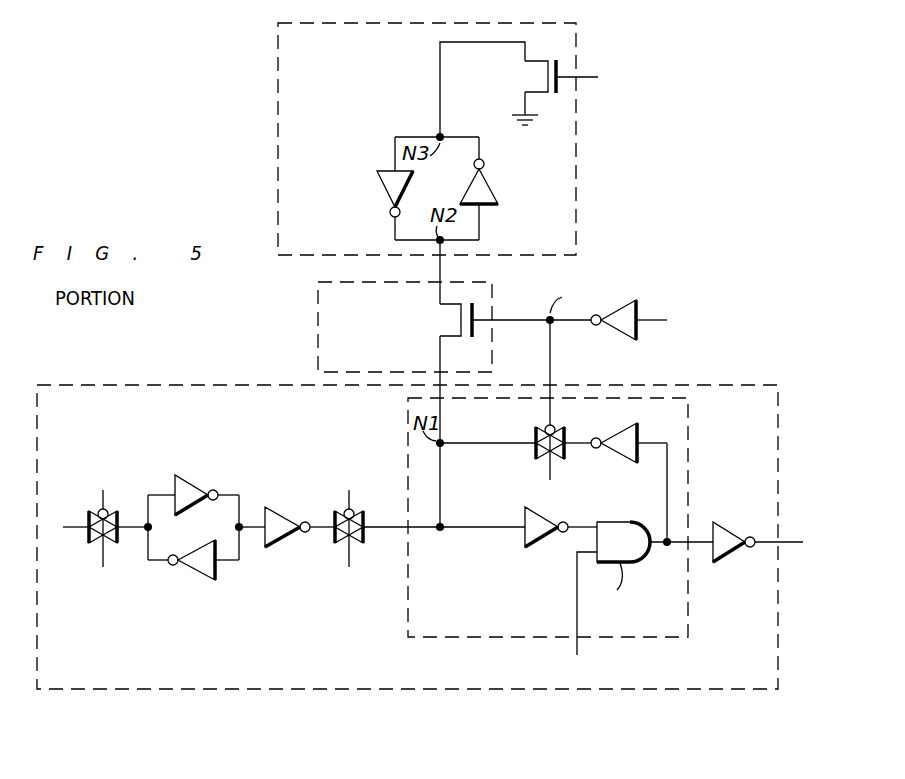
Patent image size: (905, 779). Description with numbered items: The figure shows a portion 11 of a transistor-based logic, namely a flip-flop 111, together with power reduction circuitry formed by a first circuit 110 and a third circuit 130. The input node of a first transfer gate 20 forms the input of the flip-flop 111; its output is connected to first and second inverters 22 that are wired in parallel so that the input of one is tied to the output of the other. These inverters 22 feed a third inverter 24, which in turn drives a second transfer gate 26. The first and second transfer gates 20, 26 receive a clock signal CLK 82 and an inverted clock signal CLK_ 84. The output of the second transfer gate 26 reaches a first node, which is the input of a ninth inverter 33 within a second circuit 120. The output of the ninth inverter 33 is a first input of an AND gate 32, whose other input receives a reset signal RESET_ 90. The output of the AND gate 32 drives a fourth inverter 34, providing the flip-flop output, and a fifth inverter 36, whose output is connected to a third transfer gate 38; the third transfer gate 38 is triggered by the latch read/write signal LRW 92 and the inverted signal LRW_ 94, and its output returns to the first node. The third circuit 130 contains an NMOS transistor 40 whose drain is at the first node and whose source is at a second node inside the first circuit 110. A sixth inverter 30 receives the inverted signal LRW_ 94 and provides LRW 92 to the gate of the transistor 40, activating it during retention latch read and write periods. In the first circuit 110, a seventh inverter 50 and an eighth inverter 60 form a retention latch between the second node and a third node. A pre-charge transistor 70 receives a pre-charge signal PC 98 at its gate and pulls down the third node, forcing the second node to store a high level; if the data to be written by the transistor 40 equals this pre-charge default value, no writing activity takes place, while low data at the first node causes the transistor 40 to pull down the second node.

The portion 11 is at (163, 307).
The first transfer gate 20 is at (90, 517).
The first and second inverters 22 is at (197, 487).
The third inverter 24 is at (283, 545).
The second transfer gate 26 is at (365, 518).
The sixth inverter 30 is at (618, 327).
The AND gate 32 is at (612, 520).
The ninth inverter 33 is at (543, 547).
The fourth inverter 34 is at (732, 558).
The fifth inverter 36 is at (618, 453).
The third transfer gate 38 is at (537, 447).
The NMOS transistor 40 is at (450, 320).
The seventh inverter 50 is at (488, 183).
The eighth inverter 60 is at (383, 187).
The pre-charge transistor 70 is at (540, 81).
The clock signal CLK 82 is at (107, 465).
The inverted CLK signal 84 is at (221, 569).
The reset signal RESET_ 90 is at (582, 618).
The latch read/write signal 92 is at (578, 283).
The inverted latch read/write signal 94 is at (632, 410).
The pre-charge signal 98 is at (622, 63).
The first circuit 110 is at (577, 185).
The flip-flop 111 is at (778, 490).
The second circuit 120 is at (407, 597).
The third circuit 130 is at (317, 338).